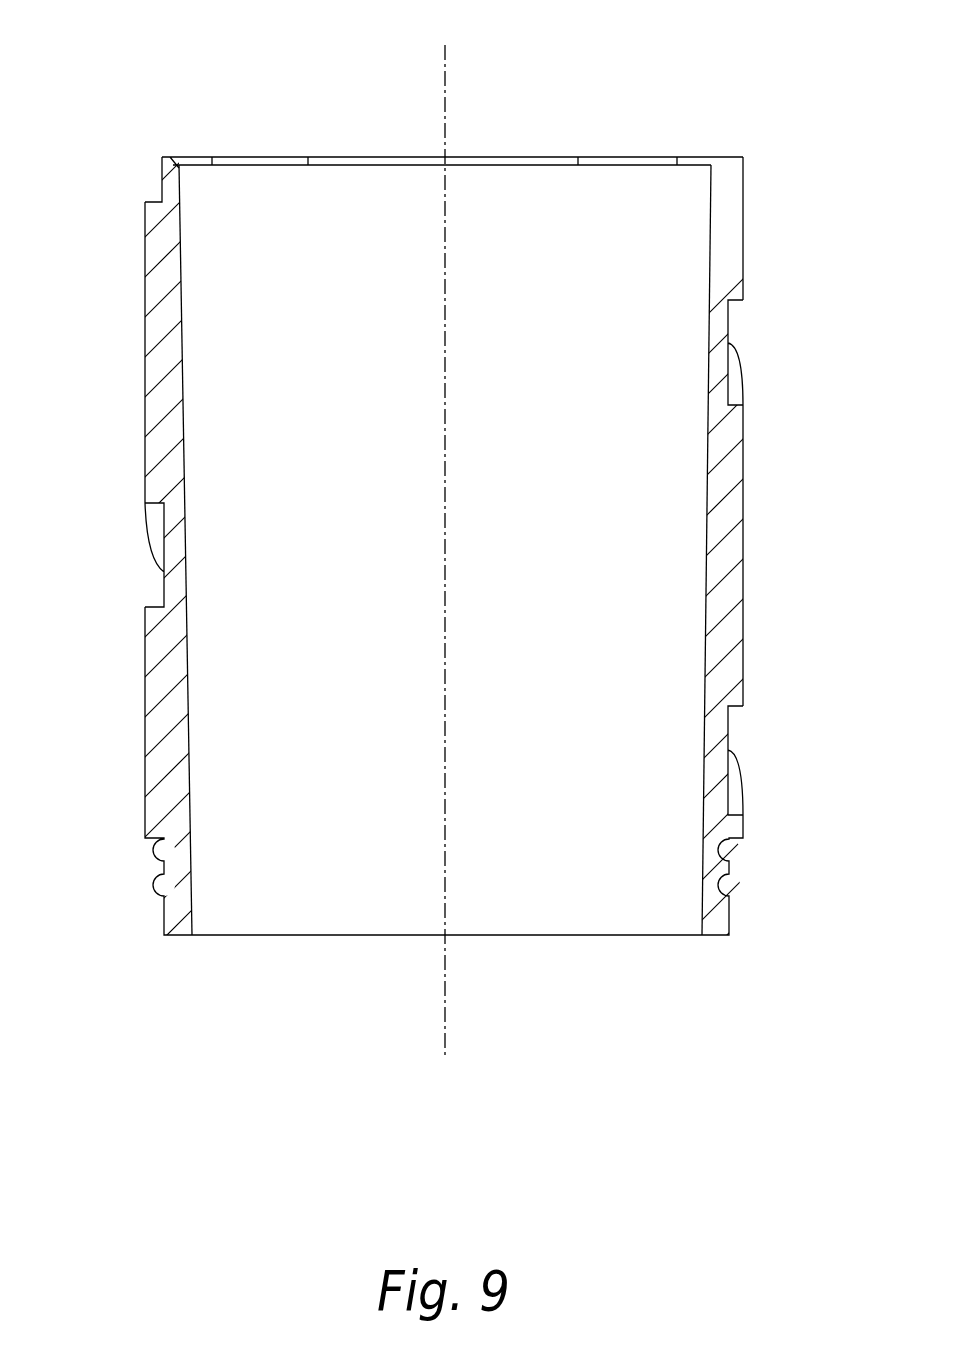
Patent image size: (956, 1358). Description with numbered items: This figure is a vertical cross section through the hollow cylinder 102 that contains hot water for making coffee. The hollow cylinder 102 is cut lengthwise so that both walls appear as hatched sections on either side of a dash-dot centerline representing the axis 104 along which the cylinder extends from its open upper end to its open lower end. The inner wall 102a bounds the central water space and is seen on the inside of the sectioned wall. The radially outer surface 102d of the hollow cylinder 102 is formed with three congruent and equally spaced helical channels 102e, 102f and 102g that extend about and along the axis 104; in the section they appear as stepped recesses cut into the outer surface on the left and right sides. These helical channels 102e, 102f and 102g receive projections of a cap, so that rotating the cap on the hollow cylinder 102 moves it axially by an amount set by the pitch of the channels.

The hollow cylinder 102 is at (632, 105).
The axis 104 is at (445, 98).
The inner wall 102a is at (703, 853).
The radially outer surface 102d is at (145, 335).
The helical channel 102e is at (728, 325).
The helical channel 102f is at (164, 592).
The helical channel 102g is at (728, 727).